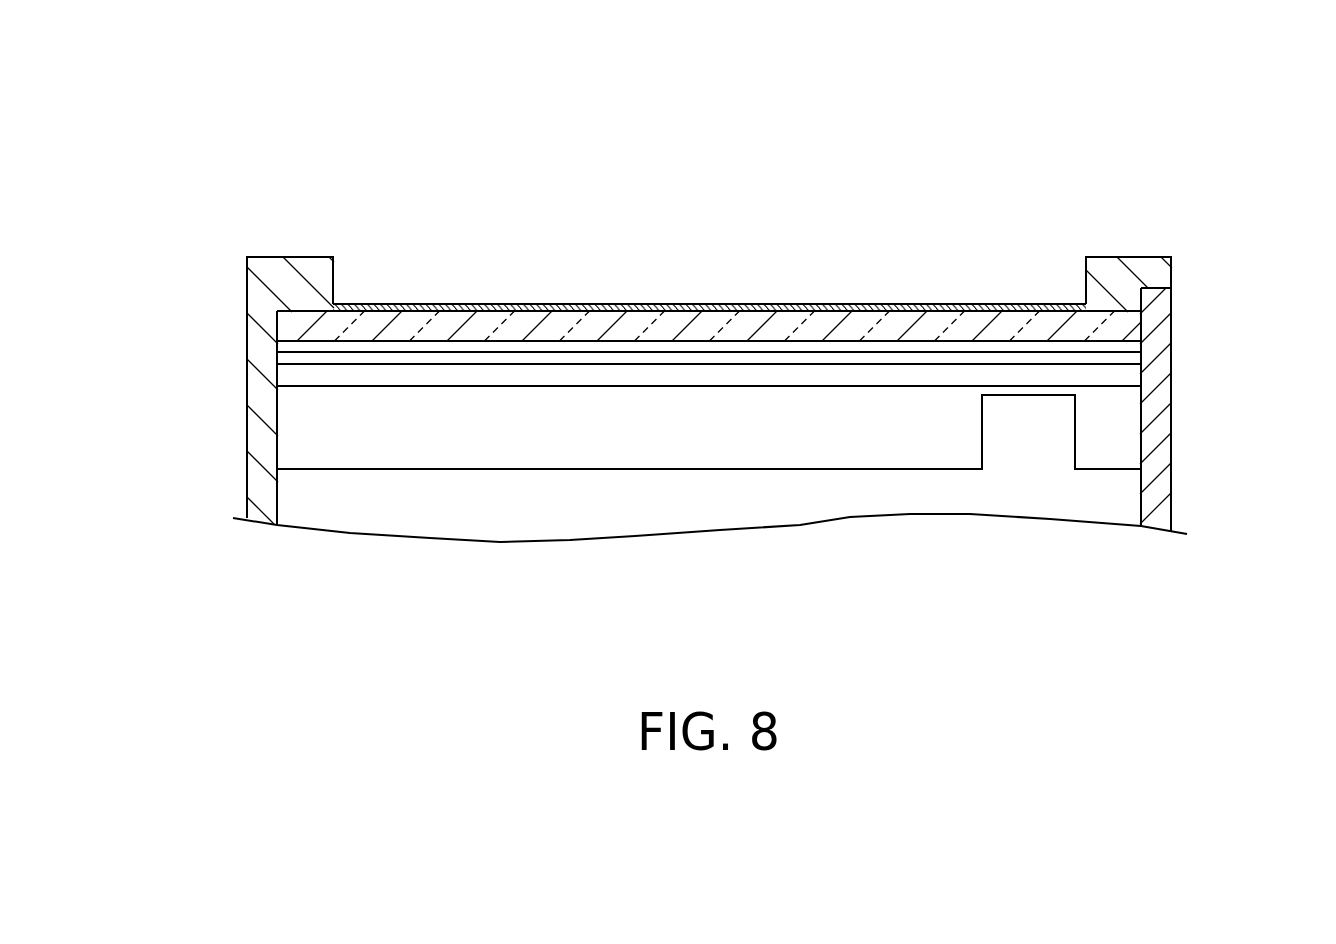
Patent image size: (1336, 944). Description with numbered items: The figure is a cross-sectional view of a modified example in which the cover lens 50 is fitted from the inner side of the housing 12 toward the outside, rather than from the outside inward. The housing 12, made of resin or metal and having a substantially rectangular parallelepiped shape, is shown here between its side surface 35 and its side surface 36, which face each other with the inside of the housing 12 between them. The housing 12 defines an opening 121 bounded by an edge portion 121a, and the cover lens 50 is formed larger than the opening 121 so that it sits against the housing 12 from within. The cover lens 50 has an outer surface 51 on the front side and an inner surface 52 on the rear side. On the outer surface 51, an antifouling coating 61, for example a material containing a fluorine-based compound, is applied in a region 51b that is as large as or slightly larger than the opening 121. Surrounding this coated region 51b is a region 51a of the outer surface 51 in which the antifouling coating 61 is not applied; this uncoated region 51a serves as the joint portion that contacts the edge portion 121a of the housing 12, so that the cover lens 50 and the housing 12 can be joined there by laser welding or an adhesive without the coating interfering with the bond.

The housing 12 is at (228, 357).
The side surface 35 is at (247, 374).
The side surface 36 is at (1171, 427).
The cover lens 50 is at (783, 350).
The outer surface 51 is at (709, 193).
The region 51a is at (577, 82).
The region 51b is at (709, 201).
The inner surface 52 is at (607, 343).
The antifouling coating 61 is at (713, 305).
The opening 121 is at (1086, 283).
The edge portion 121a is at (315, 311).